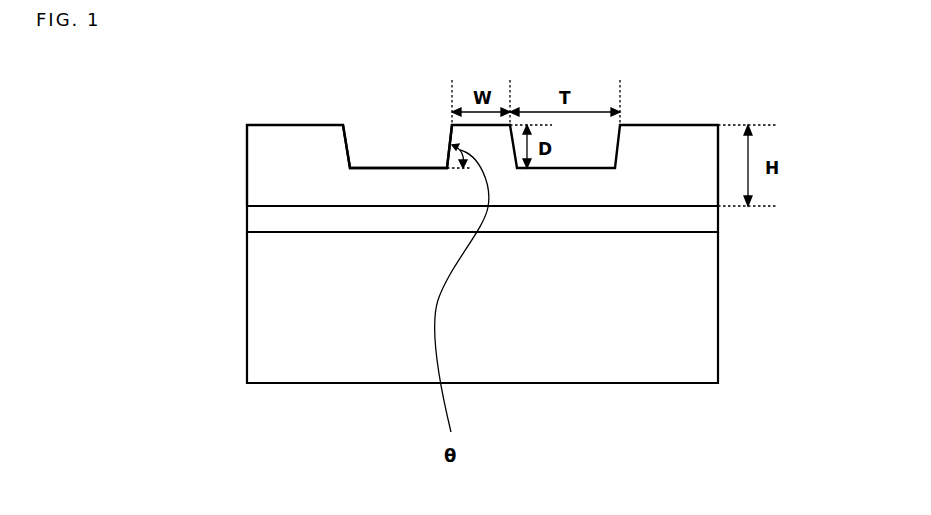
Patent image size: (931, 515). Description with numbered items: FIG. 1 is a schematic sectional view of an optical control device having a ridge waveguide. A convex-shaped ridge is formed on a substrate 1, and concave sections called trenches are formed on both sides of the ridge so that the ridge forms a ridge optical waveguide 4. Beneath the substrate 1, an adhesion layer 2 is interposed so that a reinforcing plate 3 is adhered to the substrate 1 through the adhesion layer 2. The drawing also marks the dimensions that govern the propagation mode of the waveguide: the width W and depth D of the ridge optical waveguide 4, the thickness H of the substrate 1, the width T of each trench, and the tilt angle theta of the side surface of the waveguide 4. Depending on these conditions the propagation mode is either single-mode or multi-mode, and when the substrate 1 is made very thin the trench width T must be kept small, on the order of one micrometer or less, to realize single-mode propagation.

The substrate 1 is at (265, 186).
The adhesion layer 2 is at (277, 220).
The reinforcing plate 3 is at (349, 363).
The ridge optical waveguide 4 is at (447, 124).